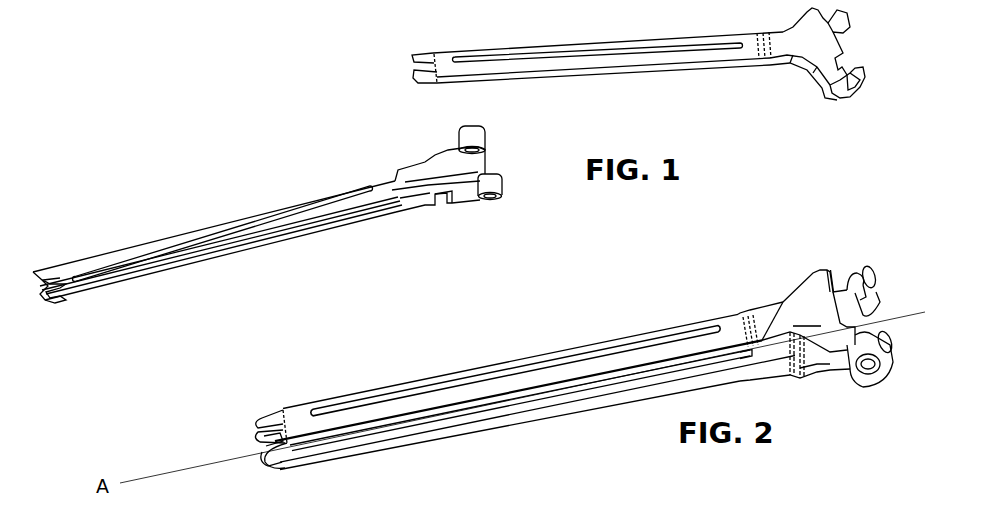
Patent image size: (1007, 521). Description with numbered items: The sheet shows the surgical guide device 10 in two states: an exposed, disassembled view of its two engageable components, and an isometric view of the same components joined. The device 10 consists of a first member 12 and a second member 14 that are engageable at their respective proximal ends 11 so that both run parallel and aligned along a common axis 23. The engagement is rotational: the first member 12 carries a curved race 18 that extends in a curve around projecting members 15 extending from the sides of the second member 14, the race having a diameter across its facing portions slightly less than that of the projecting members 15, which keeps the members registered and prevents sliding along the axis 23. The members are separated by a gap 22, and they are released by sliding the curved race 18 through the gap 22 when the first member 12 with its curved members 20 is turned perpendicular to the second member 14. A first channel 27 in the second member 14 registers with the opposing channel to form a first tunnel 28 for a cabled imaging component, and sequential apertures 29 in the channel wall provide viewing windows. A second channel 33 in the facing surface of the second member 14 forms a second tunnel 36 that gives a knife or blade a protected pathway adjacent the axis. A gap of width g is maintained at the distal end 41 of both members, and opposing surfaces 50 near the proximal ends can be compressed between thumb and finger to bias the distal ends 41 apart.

In FIG. 2, the device 10 is at (640, 302).
In FIG. 1, the proximal end 11 is at (832, 87).
In FIG. 1, the first member 12 is at (770, 60).
In FIG. 2, the first member 12 is at (813, 270).
In FIG. 1, the second member 14 is at (448, 152).
In FIG. 2, the second member 14 is at (817, 377).
In FIG. 1, the projecting members 15 is at (470, 126).
In FIG. 2, the projecting members 15 is at (864, 367).
In FIG. 1, the curved race 18 is at (486, 135).
In FIG. 2, the curved members 20 is at (873, 288).
In FIG. 2, the gap 22 is at (848, 256).
In FIG. 2, the axis 23 is at (265, 462).
In FIG. 1, the first channel 27 is at (387, 188).
In FIG. 2, the first tunnel 28 is at (266, 430).
In FIG. 2, the apertures 29 is at (333, 406).
In FIG. 1, the second channel 33 is at (408, 194).
In FIG. 2, the second tunnel 36 is at (268, 450).
In FIG. 2, the distal end 41 is at (268, 413).
In FIG. 2, the opposing surfaces 50 is at (821, 307).